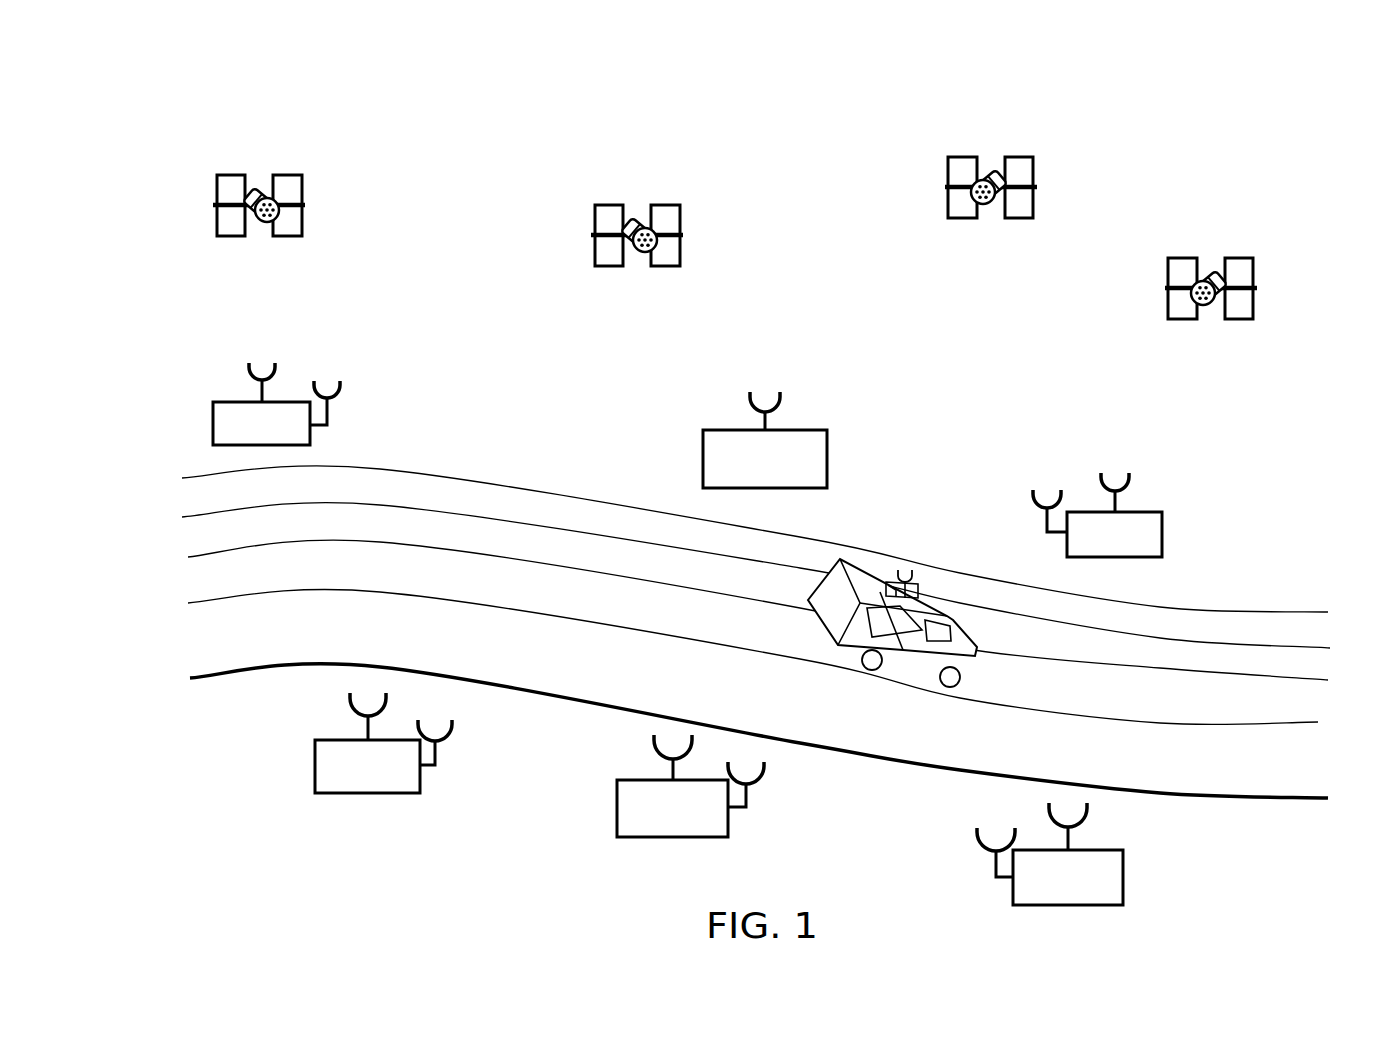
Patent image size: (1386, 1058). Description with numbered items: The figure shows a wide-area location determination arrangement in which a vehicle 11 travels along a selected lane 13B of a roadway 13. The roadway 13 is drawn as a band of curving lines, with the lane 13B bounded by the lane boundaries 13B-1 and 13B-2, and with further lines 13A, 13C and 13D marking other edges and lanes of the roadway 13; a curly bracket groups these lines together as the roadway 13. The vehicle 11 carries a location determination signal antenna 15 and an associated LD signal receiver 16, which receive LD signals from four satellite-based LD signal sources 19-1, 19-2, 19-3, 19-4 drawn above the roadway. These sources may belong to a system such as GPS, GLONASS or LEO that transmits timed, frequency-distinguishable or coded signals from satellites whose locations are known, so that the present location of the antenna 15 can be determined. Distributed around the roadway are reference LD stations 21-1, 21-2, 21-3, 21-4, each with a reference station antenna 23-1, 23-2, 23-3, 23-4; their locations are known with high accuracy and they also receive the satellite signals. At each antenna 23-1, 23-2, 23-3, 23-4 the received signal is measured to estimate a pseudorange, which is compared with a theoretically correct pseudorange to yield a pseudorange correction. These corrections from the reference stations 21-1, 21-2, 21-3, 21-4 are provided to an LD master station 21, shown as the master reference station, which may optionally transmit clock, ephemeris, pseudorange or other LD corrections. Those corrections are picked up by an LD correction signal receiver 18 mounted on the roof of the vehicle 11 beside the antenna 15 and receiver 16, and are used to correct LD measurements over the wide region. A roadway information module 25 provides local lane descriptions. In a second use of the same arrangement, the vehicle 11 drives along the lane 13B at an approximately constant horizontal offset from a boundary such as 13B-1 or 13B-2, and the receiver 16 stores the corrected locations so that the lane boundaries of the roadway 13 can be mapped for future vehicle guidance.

The vehicle 11 is at (891, 607).
The roadway 13 is at (766, 632).
The roadway edge line 13A is at (252, 660).
The selected lane 13B is at (268, 583).
The lane boundary 13B-1 is at (1130, 725).
The lane boundary 13B-2 is at (1187, 675).
The roadway lane line 13C is at (305, 530).
The roadway edge line 13D is at (315, 495).
The location determination signal antenna 15 is at (915, 580).
The location determination signal receiver 16 is at (918, 597).
The LD correction signal receiver 18 is at (887, 577).
The satellite-based LD signal source 19-1 is at (277, 183).
The satellite-based LD signal source 19-2 is at (660, 218).
The satellite-based LD signal source 19-3 is at (1022, 172).
The satellite-based LD signal source 19-4 is at (1243, 268).
The LD master station 21 is at (627, 794).
The reference LD station 21-1 is at (1102, 854).
The reference LD station 21-2 is at (329, 743).
The reference LD station 21-3 is at (233, 389).
The reference LD station 21-4 is at (1144, 499).
The reference station antenna 23-1 is at (1072, 837).
The reference station antenna 23-2 is at (367, 722).
The reference station antenna 23-3 is at (260, 392).
The reference station antenna 23-4 is at (1120, 497).
The roadway information module 25 is at (814, 451).